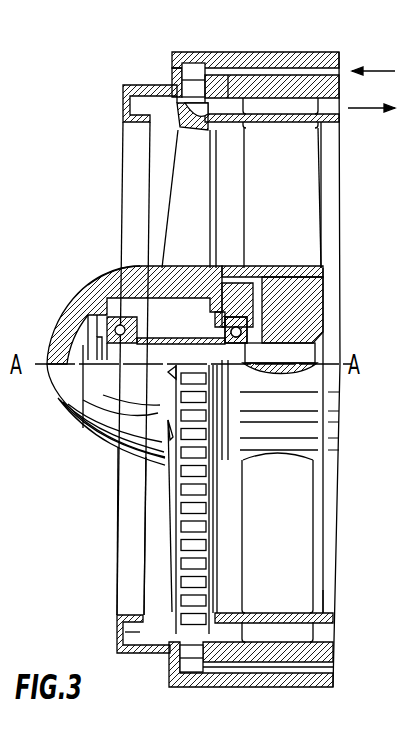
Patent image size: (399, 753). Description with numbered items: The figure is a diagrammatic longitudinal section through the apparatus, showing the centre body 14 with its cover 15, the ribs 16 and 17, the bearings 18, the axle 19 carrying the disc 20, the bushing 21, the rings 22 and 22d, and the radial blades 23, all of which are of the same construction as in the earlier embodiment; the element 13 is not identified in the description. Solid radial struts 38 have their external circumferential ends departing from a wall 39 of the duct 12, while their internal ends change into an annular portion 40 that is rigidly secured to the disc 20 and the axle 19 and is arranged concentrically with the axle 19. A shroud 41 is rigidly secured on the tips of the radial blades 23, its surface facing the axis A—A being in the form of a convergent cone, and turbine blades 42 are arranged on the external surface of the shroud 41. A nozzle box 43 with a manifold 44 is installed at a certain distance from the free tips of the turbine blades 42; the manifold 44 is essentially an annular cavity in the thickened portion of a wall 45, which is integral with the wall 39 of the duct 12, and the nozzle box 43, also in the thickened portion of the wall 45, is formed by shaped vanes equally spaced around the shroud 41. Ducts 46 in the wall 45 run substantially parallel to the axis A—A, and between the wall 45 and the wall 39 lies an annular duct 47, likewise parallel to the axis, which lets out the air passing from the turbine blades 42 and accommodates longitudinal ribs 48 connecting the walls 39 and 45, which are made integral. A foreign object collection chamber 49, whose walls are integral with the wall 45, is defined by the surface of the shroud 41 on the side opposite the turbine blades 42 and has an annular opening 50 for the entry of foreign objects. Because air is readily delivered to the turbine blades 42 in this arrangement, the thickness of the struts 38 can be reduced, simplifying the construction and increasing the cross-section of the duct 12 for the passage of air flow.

The duct 12 is at (232, 568).
The hub cap 13 is at (82, 426).
The centre body 14 is at (147, 274).
The cover 15 is at (62, 331).
The rib 16 is at (110, 300).
The rib 17 is at (242, 290).
The bearings 18 is at (225, 332).
The axle 19 is at (305, 357).
The disc 20 is at (332, 330).
The bushing 21 is at (163, 345).
The ring 22 is at (103, 352).
The ring 22d is at (227, 318).
The radial blades 23 is at (185, 182).
The solid radial struts 38 is at (305, 212).
The wall of the duct 39 is at (335, 118).
The annular portion 40 is at (313, 294).
The shroud 41 is at (200, 108).
The turbine blades 42 is at (229, 84).
The nozzle box 43 is at (185, 86).
The manifold 44 is at (195, 72).
The wall 45 is at (330, 88).
The ducts 46 is at (315, 57).
The annular duct 47 is at (240, 108).
The longitudinal ribs 48 is at (282, 106).
The foreign object collection chamber 49 is at (125, 92).
The annular opening 50 is at (118, 625).